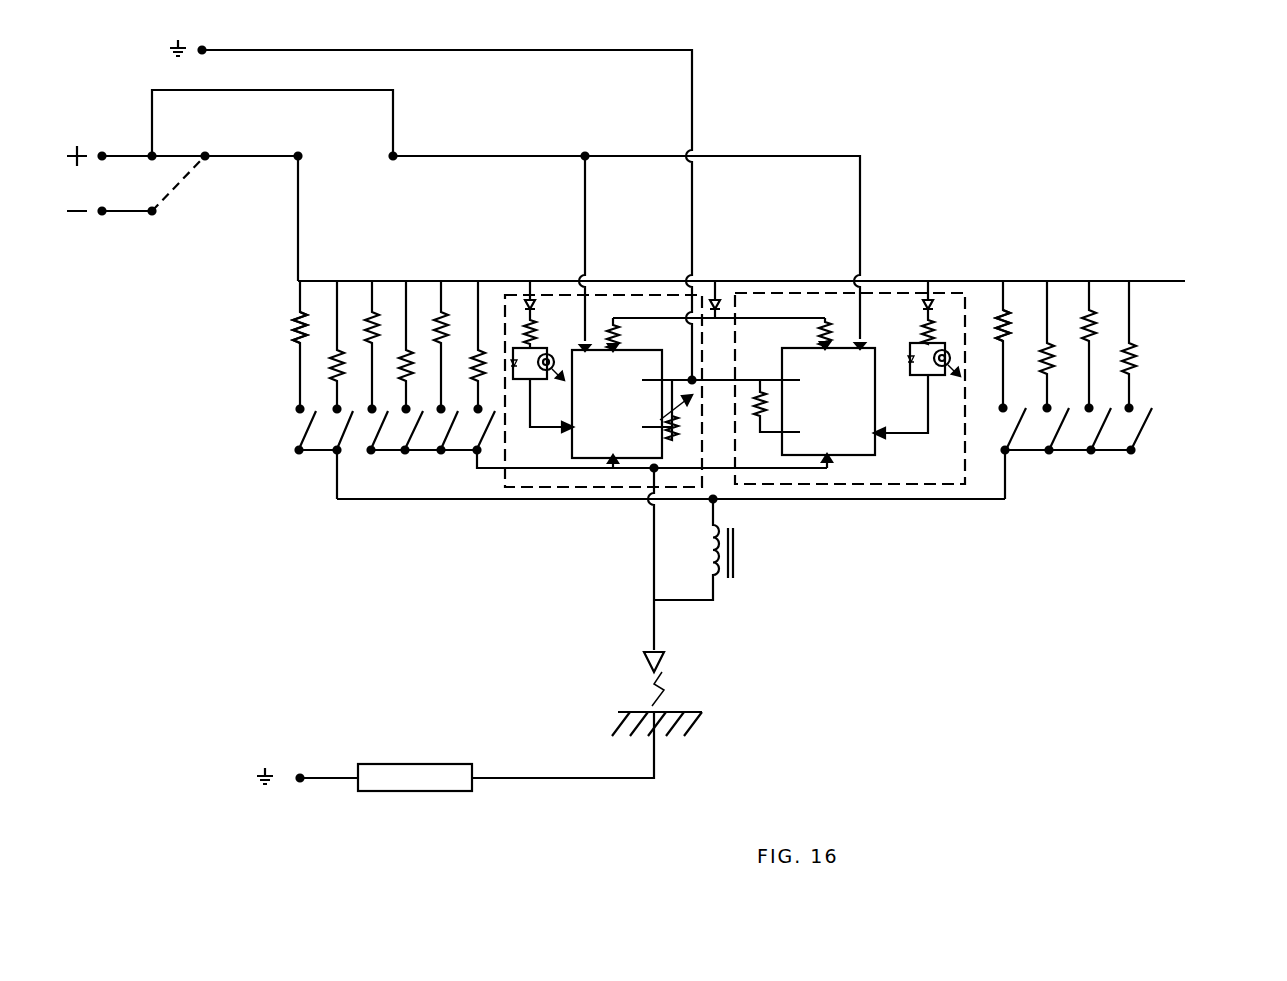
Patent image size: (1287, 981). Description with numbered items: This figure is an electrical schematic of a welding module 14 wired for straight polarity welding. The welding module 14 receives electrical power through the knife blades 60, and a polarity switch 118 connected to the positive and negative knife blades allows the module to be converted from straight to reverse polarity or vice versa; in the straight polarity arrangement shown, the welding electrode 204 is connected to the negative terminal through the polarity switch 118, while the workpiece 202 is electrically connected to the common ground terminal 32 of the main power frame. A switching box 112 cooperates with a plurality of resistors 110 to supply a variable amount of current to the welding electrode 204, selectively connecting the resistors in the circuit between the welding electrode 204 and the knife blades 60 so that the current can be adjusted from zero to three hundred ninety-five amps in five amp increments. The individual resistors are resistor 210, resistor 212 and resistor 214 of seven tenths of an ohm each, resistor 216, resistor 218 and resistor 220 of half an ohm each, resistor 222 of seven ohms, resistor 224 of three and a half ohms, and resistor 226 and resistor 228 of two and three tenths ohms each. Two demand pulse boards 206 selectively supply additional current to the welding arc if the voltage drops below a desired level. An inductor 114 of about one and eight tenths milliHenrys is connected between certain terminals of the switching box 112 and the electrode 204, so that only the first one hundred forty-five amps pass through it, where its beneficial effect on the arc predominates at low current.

The welding module 14 is at (1120, 558).
The common ground terminal 32 is at (445, 792).
The knife blades 60 is at (95, 134).
The resistors 110 is at (276, 327).
The switching box 112 is at (314, 491).
The inductor 114 is at (735, 567).
The polarity switch 118 is at (176, 146).
The workpiece 202 is at (692, 712).
The welding electrode 204 is at (650, 636).
The demand pulse boards 206 is at (585, 487).
The resistor 210 is at (300, 385).
The resistor 212 is at (331, 292).
The resistor 214 is at (369, 300).
The resistor 216 is at (388, 296).
The resistor 218 is at (448, 298).
The resistor 220 is at (482, 293).
The resistor 222 is at (1000, 296).
The resistor 224 is at (1042, 300).
The resistor 226 is at (1085, 300).
The resistor 228 is at (1130, 292).